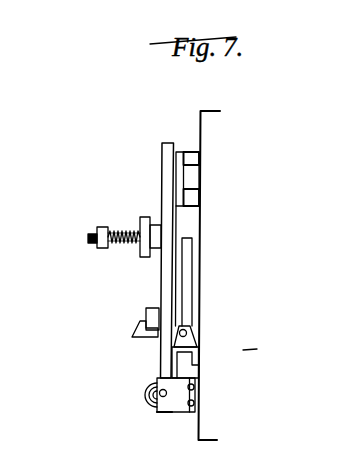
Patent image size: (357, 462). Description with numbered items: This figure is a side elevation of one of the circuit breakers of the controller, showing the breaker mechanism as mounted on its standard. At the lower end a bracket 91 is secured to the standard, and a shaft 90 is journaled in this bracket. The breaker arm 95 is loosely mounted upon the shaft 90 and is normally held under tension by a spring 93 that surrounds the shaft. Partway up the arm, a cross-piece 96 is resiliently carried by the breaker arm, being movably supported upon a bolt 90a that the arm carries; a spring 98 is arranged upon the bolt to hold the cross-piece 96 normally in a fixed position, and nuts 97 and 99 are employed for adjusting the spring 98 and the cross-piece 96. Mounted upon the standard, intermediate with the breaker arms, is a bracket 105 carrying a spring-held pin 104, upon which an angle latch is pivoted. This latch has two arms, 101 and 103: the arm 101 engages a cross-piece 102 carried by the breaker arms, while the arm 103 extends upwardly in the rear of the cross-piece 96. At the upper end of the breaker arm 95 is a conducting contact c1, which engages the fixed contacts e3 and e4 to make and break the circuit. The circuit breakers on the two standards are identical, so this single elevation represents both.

The contact e3 is at (190, 159).
The conducting contact c1 is at (178, 177).
The contact e4 is at (192, 194).
The breaker arm 95 is at (163, 354).
The cross-piece 96 is at (145, 217).
The nut 97 is at (156, 222).
The spring 98 is at (125, 244).
The nut 99 is at (102, 226).
The bolt 90a is at (89, 244).
The latch arm 103 is at (186, 285).
The spring-held pin 104 is at (188, 333).
The bracket 105 is at (197, 357).
The cross-piece 102 is at (146, 313).
The latch arm 101 is at (134, 335).
The spring 93 is at (152, 403).
The shaft 90 is at (162, 406).
The bracket 91 is at (185, 409).